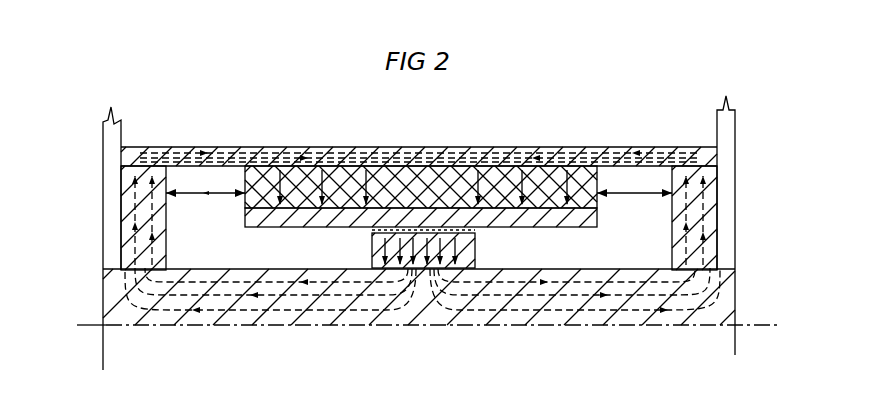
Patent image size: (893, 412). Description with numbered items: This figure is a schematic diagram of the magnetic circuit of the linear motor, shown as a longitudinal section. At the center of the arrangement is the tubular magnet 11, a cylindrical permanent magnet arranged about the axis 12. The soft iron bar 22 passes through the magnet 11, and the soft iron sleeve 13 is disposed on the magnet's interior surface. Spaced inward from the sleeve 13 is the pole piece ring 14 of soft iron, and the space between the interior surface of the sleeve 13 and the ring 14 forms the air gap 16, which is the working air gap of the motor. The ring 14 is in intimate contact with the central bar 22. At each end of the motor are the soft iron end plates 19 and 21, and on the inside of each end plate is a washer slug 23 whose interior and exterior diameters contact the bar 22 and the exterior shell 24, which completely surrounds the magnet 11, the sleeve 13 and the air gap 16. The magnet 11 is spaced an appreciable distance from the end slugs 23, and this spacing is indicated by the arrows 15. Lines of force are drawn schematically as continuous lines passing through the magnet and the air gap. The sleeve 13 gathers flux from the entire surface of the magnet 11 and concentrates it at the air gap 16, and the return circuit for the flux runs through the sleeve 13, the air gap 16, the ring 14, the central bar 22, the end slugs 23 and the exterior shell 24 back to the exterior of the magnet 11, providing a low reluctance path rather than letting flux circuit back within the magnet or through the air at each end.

The tubular magnet 11 is at (388, 147).
The axis 12 is at (92, 327).
The soft iron sleeve 13 is at (262, 228).
The ring 14 is at (470, 245).
The arrows 15 is at (206, 196).
The air gap 16 is at (372, 232).
The end plate 19 is at (728, 148).
The end plate 21 is at (113, 173).
The bar 22 is at (718, 308).
The washer slug 23 is at (128, 240).
The exterior shell 24 is at (452, 147).